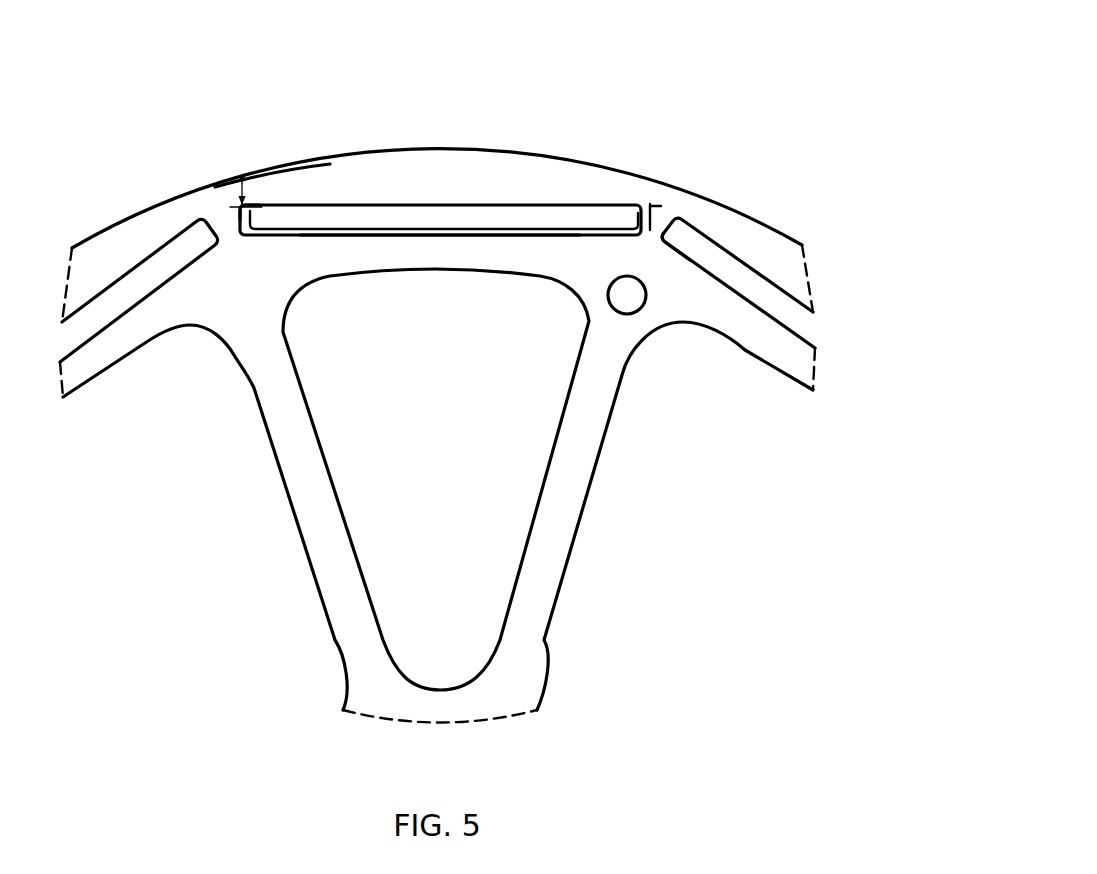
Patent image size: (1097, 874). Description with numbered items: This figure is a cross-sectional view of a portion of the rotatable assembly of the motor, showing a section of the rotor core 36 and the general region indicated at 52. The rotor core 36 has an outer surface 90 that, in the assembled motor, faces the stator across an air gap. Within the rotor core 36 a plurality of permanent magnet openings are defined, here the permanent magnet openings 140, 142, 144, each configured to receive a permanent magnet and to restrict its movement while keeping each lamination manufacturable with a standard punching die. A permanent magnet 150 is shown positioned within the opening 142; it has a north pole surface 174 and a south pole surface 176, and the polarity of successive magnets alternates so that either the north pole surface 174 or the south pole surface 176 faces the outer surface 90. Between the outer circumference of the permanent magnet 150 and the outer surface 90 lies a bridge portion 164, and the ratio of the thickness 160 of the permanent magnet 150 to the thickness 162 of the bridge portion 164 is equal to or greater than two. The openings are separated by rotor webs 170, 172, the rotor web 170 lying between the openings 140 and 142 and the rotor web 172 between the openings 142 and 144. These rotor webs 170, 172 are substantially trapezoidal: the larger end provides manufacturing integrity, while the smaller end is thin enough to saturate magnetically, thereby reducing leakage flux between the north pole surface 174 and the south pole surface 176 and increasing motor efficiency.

The rotor core 36 is at (778, 230).
The steering wheel assembly 52 is at (673, 83).
The outer surface 90 is at (546, 150).
The permanent magnet opening 140 is at (197, 233).
The permanent magnet opening 142 is at (253, 214).
The permanent magnet opening 144 is at (687, 218).
The permanent magnet 150 is at (288, 232).
The thickness of permanent magnet 160 is at (659, 210).
The thickness of bridge portion 162 is at (234, 187).
The bridge portion 164 is at (231, 188).
The rotor web 170 is at (233, 246).
The rotor web 172 is at (669, 230).
The north pole surface 174 is at (590, 203).
The south pole surface 176 is at (477, 236).